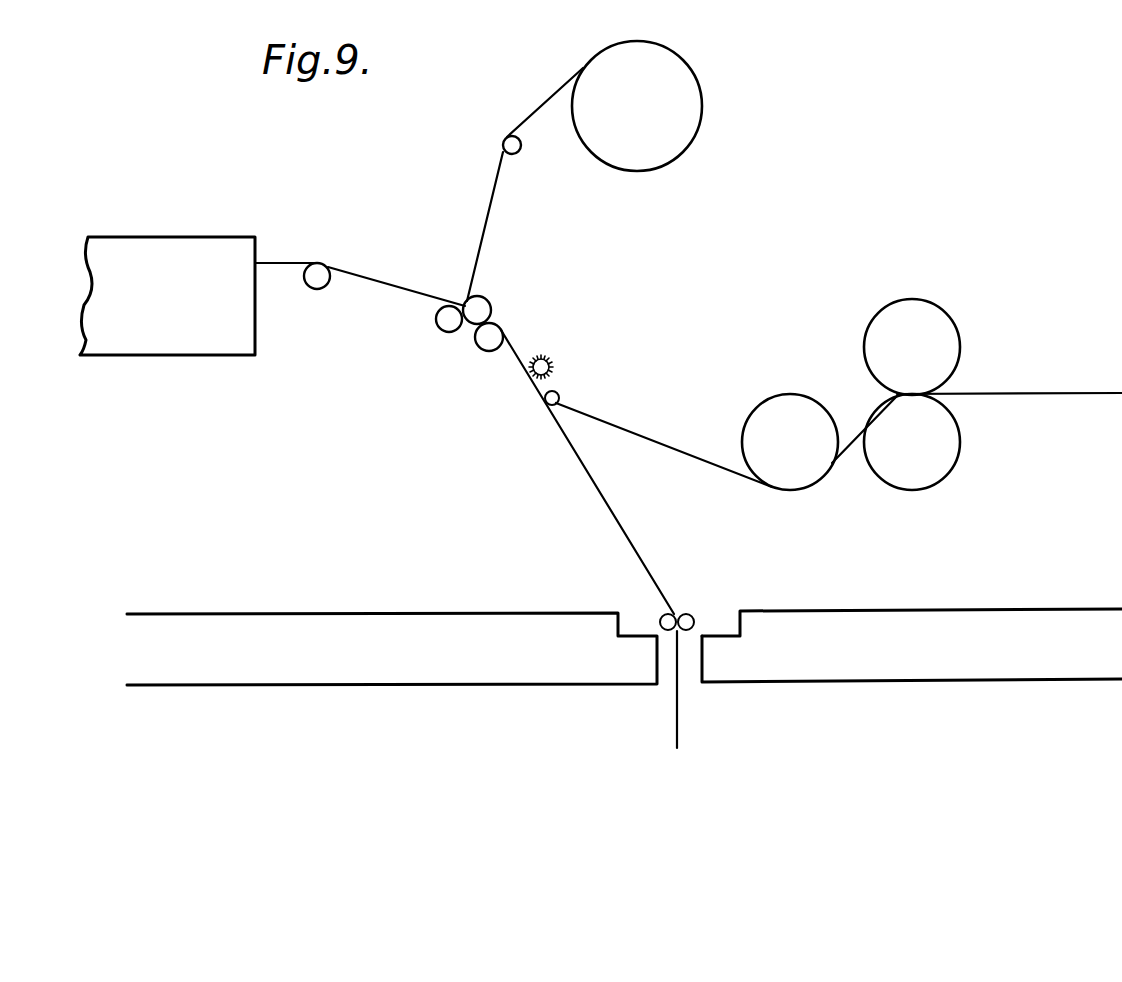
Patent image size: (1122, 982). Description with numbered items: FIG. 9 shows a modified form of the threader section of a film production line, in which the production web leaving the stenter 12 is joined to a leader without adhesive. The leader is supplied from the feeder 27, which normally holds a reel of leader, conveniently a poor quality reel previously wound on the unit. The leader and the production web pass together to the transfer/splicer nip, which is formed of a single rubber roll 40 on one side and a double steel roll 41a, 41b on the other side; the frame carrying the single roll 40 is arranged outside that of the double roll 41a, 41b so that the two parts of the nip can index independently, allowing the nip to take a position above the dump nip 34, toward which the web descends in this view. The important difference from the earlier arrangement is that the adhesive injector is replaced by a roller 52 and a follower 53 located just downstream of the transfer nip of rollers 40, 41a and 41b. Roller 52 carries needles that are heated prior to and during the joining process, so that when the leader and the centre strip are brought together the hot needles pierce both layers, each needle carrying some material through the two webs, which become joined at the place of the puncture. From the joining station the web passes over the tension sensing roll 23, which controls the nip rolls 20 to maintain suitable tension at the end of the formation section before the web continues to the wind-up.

The sideways draw heat setting unit (stenter) 12 is at (219, 338).
The feeder 27 is at (673, 144).
The single rubber roll 40 is at (478, 308).
The double steel roll 41a is at (445, 322).
The double steel roll 41b is at (487, 340).
The roller 52 is at (547, 362).
The follower 53 is at (559, 398).
The tension sensing roll 23 is at (785, 405).
The nip rolls 20 is at (935, 332).
The dump nip 34 is at (690, 617).